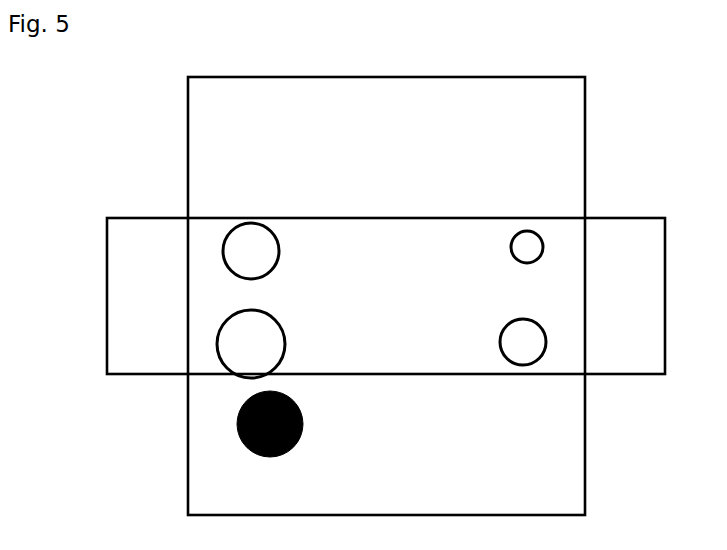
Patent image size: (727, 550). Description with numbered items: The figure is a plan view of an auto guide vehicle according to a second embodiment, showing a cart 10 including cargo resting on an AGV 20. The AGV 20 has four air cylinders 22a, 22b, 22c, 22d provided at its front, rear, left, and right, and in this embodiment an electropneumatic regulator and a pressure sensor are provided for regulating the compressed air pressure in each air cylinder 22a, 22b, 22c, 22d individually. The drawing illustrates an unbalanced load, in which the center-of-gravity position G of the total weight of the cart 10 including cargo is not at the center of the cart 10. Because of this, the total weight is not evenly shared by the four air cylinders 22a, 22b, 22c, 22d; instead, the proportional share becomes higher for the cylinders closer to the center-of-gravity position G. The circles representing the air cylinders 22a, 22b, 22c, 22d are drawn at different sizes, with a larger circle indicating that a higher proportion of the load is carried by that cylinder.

The cart 10 is at (558, 131).
The AGV 20 is at (121, 268).
The air cylinder 22a is at (232, 353).
The air cylinder 22b is at (236, 244).
The air cylinder 22c is at (538, 347).
The air cylinder 22d is at (534, 245).
The center-of-gravity position G is at (240, 436).